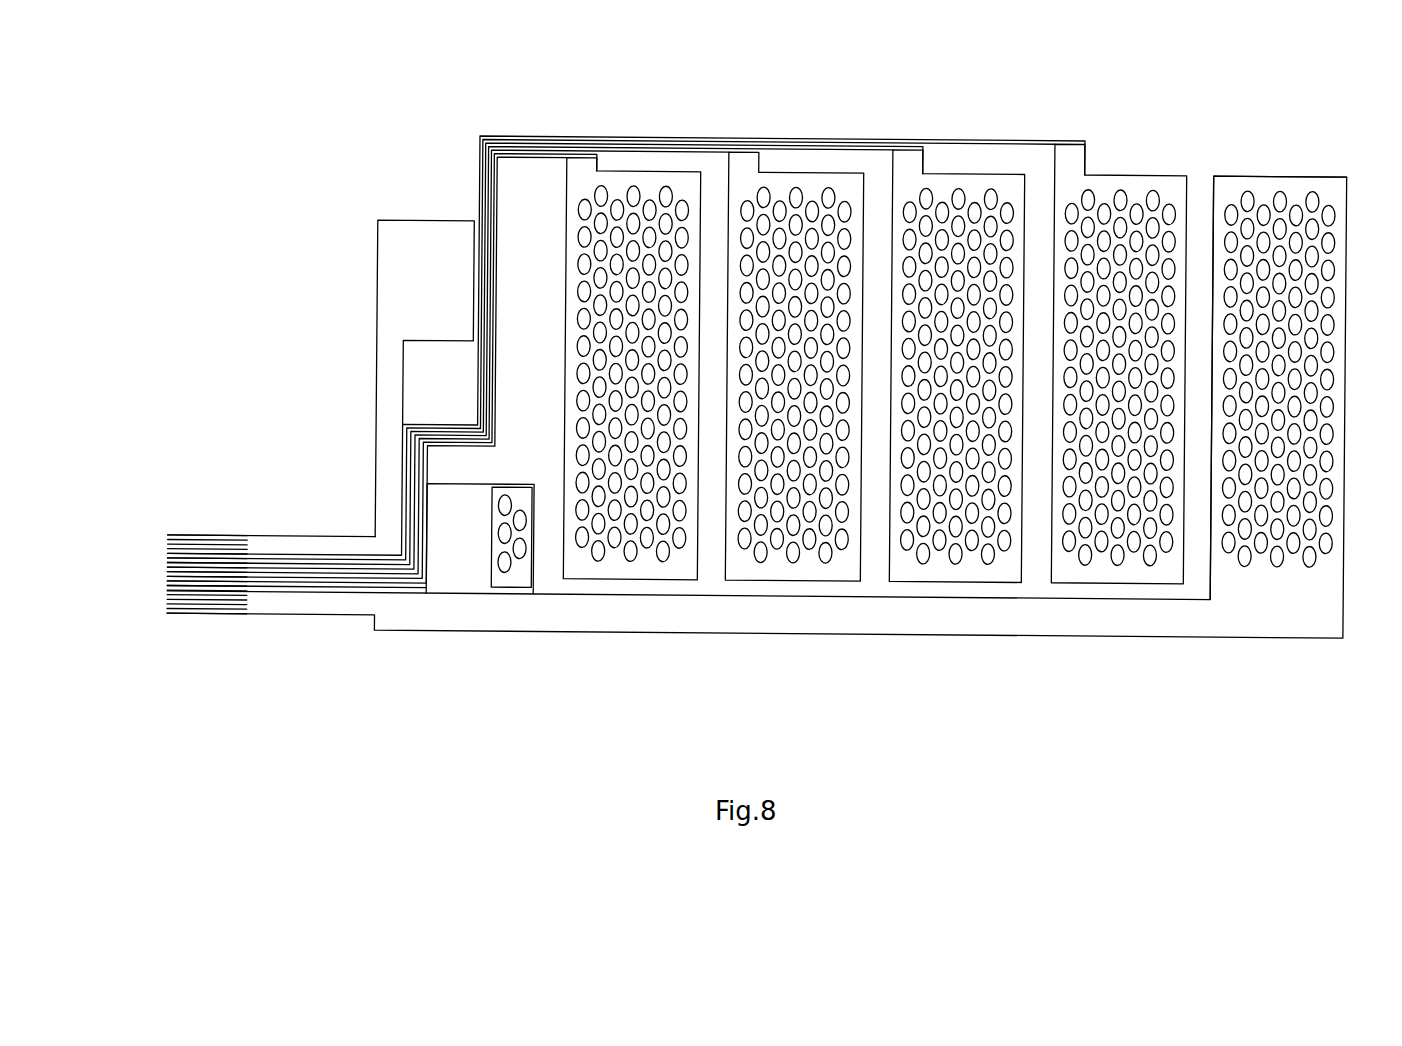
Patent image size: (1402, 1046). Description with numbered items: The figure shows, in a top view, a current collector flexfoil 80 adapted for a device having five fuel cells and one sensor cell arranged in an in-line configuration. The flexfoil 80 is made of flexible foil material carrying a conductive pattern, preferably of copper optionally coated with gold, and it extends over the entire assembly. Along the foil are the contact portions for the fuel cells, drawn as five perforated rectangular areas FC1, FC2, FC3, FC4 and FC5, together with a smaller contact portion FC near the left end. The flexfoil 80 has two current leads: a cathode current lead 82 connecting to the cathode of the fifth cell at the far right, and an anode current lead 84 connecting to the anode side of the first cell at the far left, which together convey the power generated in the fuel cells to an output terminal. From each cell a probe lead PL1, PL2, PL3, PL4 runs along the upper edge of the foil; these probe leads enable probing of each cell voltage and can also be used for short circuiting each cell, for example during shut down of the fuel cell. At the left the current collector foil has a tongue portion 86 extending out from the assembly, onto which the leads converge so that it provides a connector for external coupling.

The flexfoil 80 is at (771, 456).
The cathode current lead 82 is at (1180, 620).
The anode current lead 84 is at (385, 444).
The tongue portion 86 is at (253, 650).
The probe lead PL1 is at (549, 137).
The probe lead PL2 is at (710, 137).
The probe lead PL3 is at (858, 137).
The probe lead PL4 is at (970, 137).
The fuel cell contact portion FC is at (521, 606).
The contact portion for first fuel cell FC1 is at (619, 597).
The contact portion for second fuel cell FC2 is at (745, 596).
The contact portion for third fuel cell FC3 is at (904, 597).
The contact portion for fourth fuel cell FC4 is at (1068, 598).
The contact portion for fifth fuel cell FC5 is at (1281, 600).